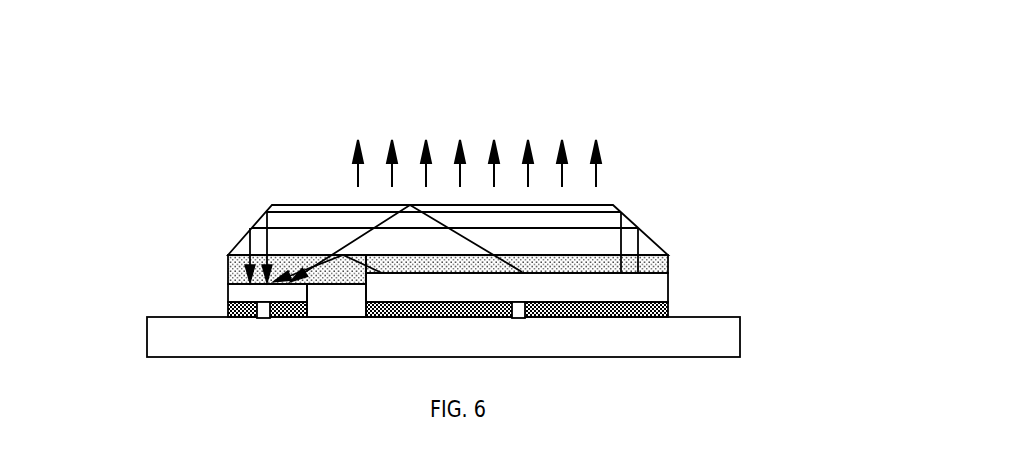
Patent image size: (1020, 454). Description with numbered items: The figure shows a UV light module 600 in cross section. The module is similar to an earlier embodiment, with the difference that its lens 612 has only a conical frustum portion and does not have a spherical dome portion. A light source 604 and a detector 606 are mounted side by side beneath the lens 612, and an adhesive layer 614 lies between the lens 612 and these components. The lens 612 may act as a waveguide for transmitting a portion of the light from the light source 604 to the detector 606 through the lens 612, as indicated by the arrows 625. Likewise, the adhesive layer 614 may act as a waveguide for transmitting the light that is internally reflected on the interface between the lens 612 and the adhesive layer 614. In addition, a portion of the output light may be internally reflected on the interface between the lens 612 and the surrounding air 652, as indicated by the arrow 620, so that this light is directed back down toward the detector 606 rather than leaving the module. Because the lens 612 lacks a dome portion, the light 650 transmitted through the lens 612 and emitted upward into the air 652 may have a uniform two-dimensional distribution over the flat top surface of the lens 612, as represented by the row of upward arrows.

The UV light module 600 is at (80, 110).
The light source 604 is at (668, 292).
The detector 606 is at (227, 297).
The lens 612 is at (239, 242).
The adhesive layer 614 is at (227, 261).
The arrow 620 is at (303, 258).
The arrows 625 is at (314, 229).
The light 650 is at (597, 162).
The air 652 is at (711, 241).